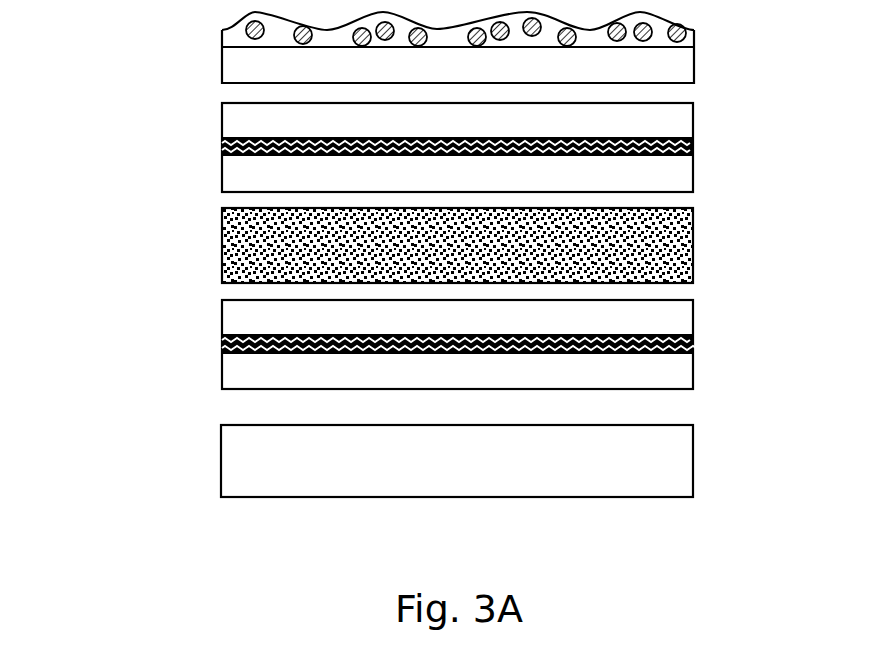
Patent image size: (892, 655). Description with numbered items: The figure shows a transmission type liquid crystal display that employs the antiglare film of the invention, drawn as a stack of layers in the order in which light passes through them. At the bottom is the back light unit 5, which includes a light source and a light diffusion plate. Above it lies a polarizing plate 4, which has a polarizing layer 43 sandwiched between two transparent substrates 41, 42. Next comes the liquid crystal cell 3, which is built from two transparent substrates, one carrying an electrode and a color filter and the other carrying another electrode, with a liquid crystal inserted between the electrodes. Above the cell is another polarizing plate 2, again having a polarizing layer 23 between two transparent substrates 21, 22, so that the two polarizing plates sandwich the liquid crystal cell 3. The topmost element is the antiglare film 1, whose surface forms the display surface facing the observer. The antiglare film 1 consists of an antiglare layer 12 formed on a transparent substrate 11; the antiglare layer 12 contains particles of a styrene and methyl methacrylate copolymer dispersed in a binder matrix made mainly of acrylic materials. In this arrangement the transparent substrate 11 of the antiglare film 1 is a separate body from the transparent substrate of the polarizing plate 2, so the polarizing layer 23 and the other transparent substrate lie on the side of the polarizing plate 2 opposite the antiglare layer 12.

The antiglare film 1 is at (445, 53).
The transparent substrate 11 is at (252, 61).
The antiglare layer 12 is at (205, 13).
The polarizing plate 2 is at (417, 155).
The transparent substrate 21 is at (238, 118).
The transparent substrate 22 is at (249, 182).
The polarizing layer 23 is at (233, 143).
The liquid crystal cell 3 is at (683, 266).
The polarizing plate 4 is at (421, 350).
The transparent substrate 41 is at (242, 313).
The transparent substrate 42 is at (253, 377).
The polarizing layer 43 is at (235, 347).
The back light unit 5 is at (670, 469).